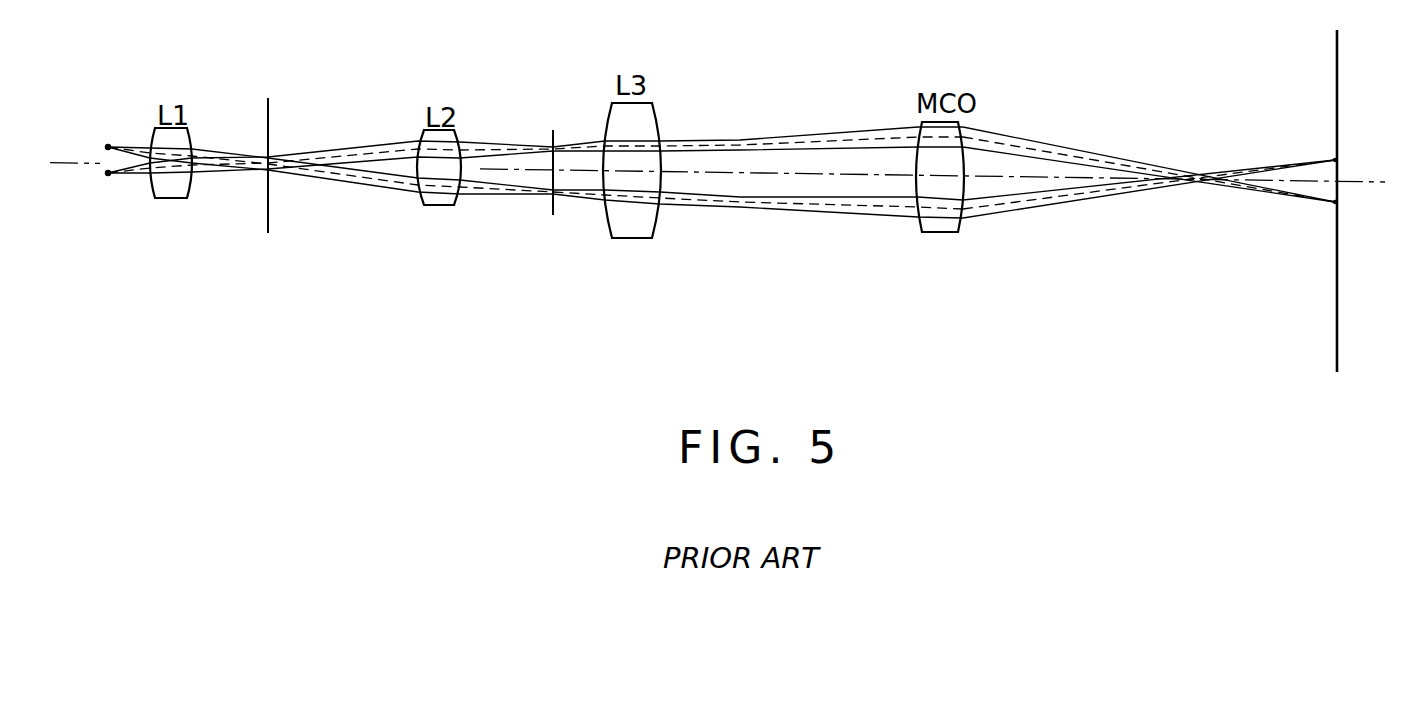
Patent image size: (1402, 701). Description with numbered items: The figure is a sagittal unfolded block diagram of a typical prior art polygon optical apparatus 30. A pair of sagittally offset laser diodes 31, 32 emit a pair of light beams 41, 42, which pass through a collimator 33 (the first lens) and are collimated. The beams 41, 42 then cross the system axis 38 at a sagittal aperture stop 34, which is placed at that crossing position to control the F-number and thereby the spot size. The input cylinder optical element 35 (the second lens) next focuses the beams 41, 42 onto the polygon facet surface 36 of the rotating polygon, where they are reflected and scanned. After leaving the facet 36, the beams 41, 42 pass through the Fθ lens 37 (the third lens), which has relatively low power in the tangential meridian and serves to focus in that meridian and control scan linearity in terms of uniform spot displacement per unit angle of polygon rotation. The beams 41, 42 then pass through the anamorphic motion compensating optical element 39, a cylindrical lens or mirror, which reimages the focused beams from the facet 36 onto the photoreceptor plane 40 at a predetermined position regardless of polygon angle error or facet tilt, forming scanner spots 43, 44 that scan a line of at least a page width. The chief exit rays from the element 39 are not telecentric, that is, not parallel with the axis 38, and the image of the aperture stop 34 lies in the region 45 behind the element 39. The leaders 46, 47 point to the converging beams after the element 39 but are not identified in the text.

The prior art apparatus 30 is at (387, 318).
The laser diode 31 is at (108, 147).
The laser diode 32 is at (108, 177).
The collimator 33 is at (177, 198).
The sagittal aperture stop 34 is at (268, 108).
The input cylinder optical element 35 is at (435, 205).
The polygon facet surface 36 is at (553, 130).
The Fθ lens 37 is at (630, 238).
The system axis 38 is at (792, 180).
The motion compensating optical element 39 is at (938, 232).
The photoreceptor plane 40 is at (1338, 92).
The light beam 41 is at (345, 187).
The light beam 42 is at (343, 149).
The scanner spot 43 is at (1334, 158).
The scanner spot 44 is at (1334, 203).
The region 45 is at (1393, 232).
The second focused beam 46 is at (1023, 147).
The first focused beam 47 is at (1025, 212).